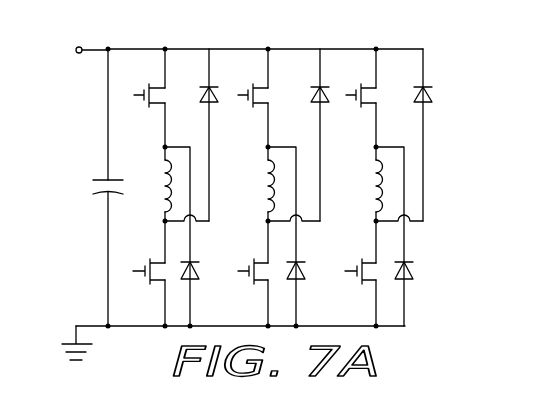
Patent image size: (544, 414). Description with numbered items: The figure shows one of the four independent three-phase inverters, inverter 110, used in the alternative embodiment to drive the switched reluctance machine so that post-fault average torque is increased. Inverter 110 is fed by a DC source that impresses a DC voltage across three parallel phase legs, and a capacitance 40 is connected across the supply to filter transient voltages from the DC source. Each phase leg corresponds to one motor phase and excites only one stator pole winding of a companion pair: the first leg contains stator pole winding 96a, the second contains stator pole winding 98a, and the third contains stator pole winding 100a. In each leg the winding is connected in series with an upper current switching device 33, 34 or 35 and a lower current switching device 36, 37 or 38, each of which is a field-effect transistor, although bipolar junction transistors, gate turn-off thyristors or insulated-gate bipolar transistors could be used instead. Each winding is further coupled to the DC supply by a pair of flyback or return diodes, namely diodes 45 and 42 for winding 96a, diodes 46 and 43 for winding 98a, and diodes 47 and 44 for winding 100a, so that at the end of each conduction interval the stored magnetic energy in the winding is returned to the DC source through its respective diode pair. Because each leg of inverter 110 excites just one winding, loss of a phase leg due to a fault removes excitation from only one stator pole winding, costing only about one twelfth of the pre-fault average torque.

The upper current switching device 33 is at (156, 107).
The upper current switching device 34 is at (259, 107).
The upper current switching device 35 is at (366, 107).
The lower current switching device 36 is at (159, 284).
The lower current switching device 37 is at (262, 285).
The lower current switching device 38 is at (366, 283).
The capacitance 40 is at (100, 178).
The flyback diode 42 is at (203, 100).
The flyback diode 43 is at (313, 100).
The flyback diode 44 is at (434, 96).
The flyback diode 45 is at (198, 273).
The flyback diode 46 is at (304, 272).
The flyback diode 47 is at (414, 272).
The stator pole winding 96a is at (172, 175).
The stator pole winding 98a is at (276, 190).
The stator pole winding 100a is at (384, 186).
The three-phase inverter 110 is at (448, 170).